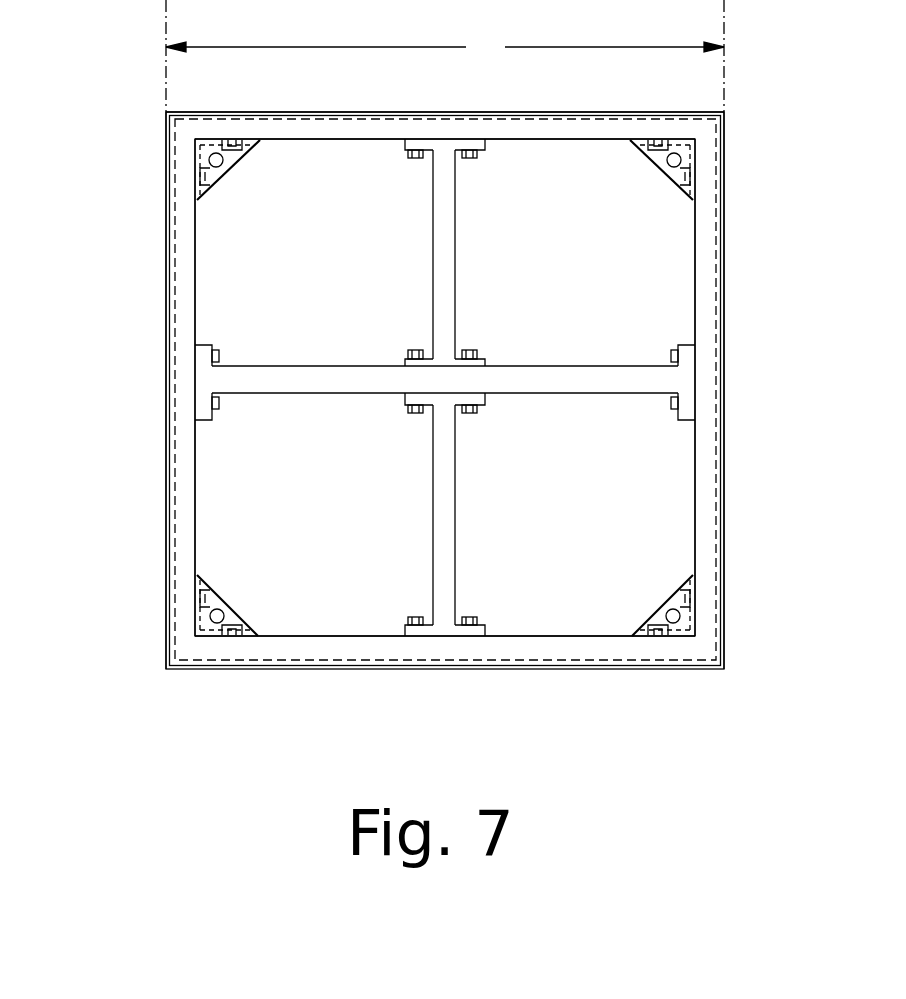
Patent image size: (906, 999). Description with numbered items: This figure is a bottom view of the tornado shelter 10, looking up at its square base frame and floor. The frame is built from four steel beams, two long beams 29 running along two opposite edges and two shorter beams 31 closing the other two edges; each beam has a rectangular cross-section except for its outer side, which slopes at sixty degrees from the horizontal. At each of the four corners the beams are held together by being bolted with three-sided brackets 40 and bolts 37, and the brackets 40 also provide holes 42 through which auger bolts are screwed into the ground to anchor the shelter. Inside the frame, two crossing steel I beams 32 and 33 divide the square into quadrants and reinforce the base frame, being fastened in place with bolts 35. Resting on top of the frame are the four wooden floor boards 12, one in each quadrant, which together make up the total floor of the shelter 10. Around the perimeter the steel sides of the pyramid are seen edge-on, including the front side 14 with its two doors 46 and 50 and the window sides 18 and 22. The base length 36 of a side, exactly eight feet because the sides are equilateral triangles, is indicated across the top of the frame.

The tornado shelter 10 is at (122, 430).
The wooden floor boards 12 is at (325, 319).
The front side 14 is at (166, 200).
The window side 18 is at (488, 110).
The window side 22 is at (723, 572).
The long beams 29 is at (181, 598).
The shorter beams 31 is at (342, 128).
The I beam 32 is at (628, 368).
The I beam 33 is at (437, 450).
The bolts 35 is at (405, 152).
The base length 36 is at (445, 56).
The bolts 37 is at (232, 148).
The three-sided brackets 40 is at (218, 598).
The bracket holes 42 is at (212, 157).
The door 46 is at (166, 506).
The door 50 is at (166, 318).